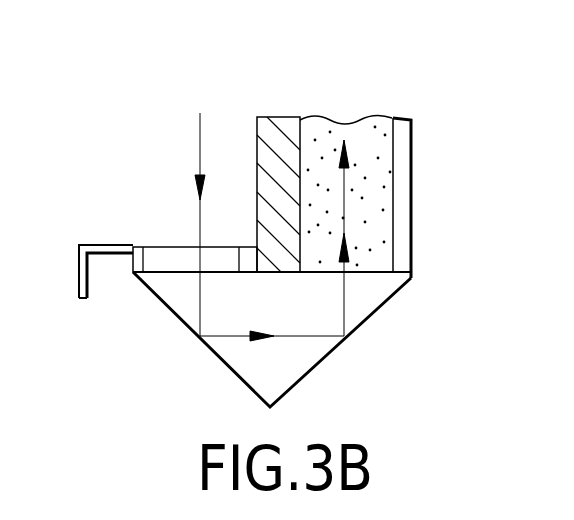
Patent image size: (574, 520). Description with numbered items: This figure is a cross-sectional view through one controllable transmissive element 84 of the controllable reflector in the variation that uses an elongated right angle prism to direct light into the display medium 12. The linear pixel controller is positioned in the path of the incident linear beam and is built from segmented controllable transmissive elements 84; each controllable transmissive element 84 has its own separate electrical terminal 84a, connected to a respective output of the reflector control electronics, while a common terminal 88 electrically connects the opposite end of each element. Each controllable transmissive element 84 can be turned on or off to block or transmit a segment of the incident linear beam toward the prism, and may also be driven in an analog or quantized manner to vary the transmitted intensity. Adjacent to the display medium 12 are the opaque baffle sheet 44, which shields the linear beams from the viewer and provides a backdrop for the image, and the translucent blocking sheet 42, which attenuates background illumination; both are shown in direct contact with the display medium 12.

The display medium 12 is at (348, 128).
The translucent blocking sheet 42 is at (403, 186).
The opaque baffle sheet 44 is at (265, 128).
The controllable transmissive element 84 is at (158, 213).
The electrical terminal 84a is at (131, 245).
The common terminal 88 is at (158, 219).